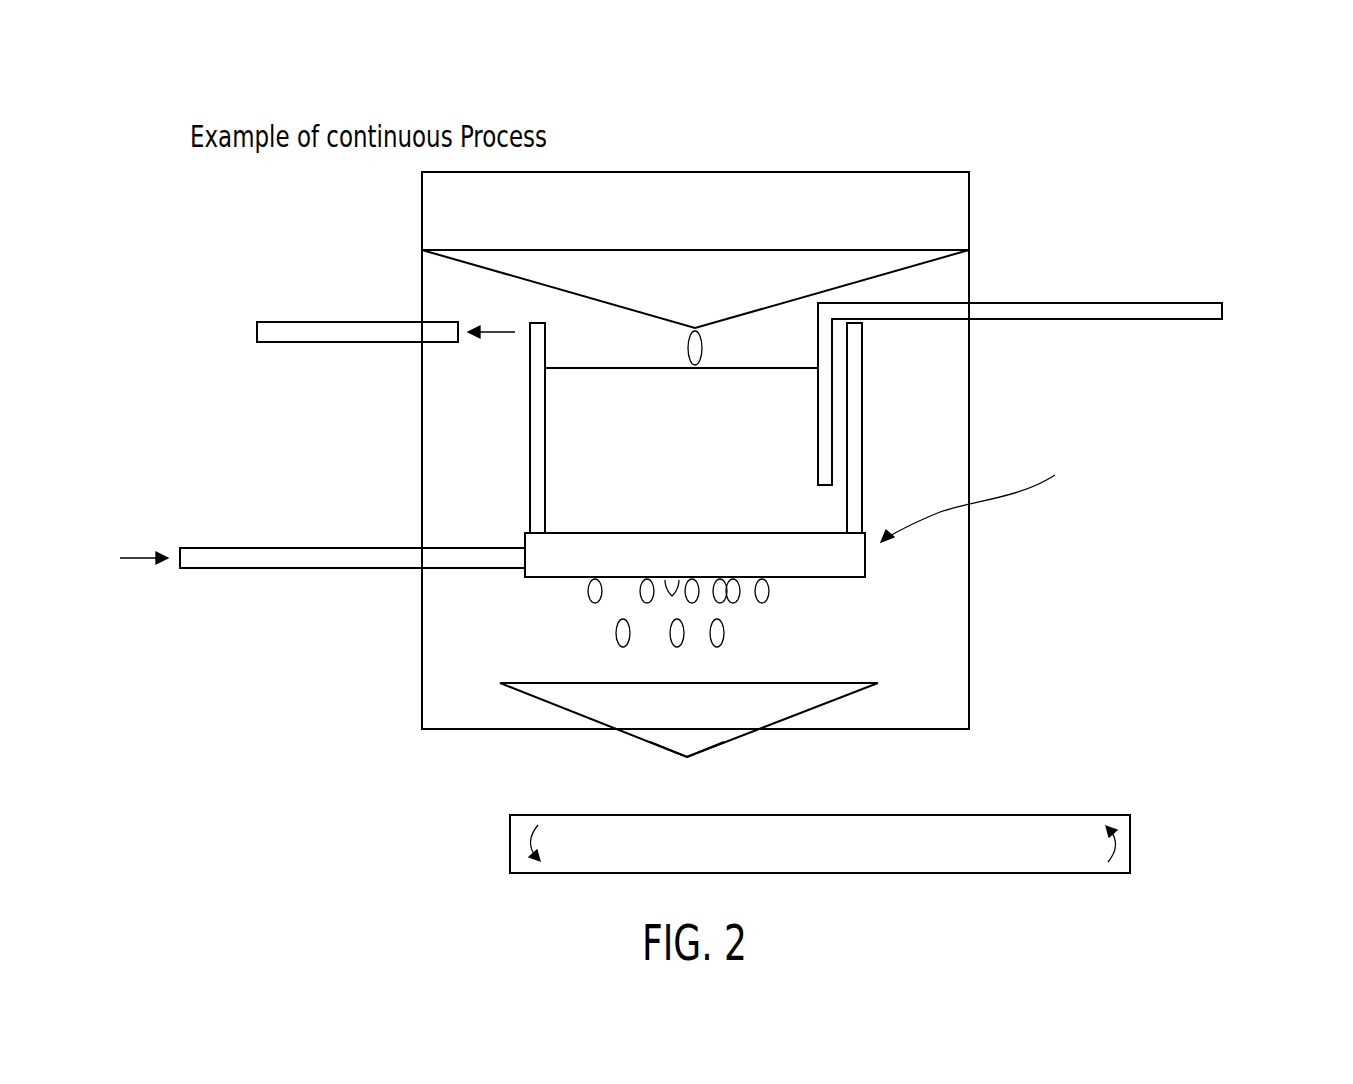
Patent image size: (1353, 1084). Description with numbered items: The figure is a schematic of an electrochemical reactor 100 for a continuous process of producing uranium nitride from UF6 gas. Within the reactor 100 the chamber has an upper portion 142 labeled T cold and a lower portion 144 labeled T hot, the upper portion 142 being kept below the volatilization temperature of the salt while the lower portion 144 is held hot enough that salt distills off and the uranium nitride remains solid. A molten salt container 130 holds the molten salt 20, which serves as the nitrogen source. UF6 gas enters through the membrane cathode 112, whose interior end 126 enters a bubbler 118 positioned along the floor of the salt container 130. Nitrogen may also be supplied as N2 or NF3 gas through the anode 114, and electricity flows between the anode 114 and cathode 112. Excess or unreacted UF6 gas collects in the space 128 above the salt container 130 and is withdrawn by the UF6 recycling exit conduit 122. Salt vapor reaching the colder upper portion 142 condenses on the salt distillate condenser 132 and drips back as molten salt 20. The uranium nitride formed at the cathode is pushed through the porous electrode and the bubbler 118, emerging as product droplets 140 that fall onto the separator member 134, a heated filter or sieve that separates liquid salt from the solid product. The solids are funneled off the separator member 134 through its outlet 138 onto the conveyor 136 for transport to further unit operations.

The electrochemical reactor 100 is at (1218, 115).
The cathode 112 is at (298, 570).
The anode 114 is at (817, 445).
The bubbler 118 is at (864, 578).
The molten salt 20 is at (703, 357).
The UF6 gas exit conduit 122 is at (298, 343).
The interior end of cathode 126 is at (525, 548).
The space above salt container 128 is at (493, 220).
The molten salt container 130 is at (865, 408).
The salt distillate condenser 132 is at (748, 250).
The separator member 134 is at (540, 700).
The conveyor 136 is at (1130, 815).
The funnel outlet 138 is at (685, 758).
The product droplets 140 is at (645, 605).
The upper portion of chamber 142 is at (970, 199).
The lower portion of chamber 144 is at (970, 656).